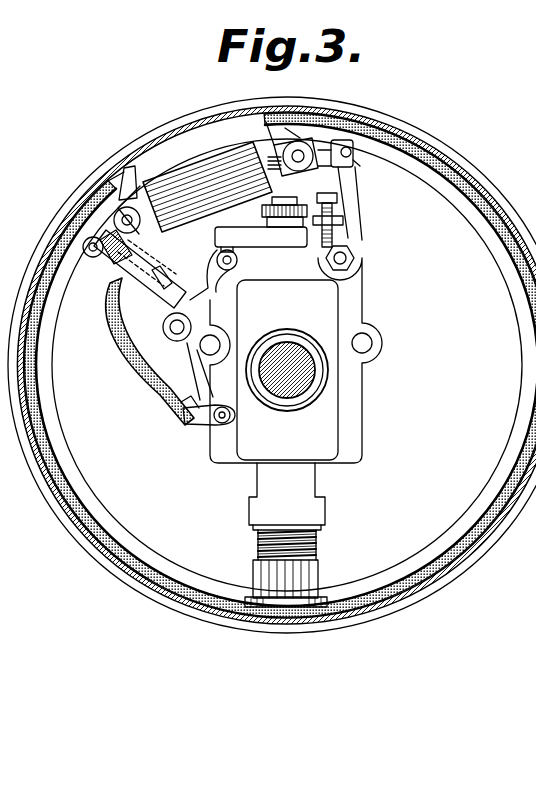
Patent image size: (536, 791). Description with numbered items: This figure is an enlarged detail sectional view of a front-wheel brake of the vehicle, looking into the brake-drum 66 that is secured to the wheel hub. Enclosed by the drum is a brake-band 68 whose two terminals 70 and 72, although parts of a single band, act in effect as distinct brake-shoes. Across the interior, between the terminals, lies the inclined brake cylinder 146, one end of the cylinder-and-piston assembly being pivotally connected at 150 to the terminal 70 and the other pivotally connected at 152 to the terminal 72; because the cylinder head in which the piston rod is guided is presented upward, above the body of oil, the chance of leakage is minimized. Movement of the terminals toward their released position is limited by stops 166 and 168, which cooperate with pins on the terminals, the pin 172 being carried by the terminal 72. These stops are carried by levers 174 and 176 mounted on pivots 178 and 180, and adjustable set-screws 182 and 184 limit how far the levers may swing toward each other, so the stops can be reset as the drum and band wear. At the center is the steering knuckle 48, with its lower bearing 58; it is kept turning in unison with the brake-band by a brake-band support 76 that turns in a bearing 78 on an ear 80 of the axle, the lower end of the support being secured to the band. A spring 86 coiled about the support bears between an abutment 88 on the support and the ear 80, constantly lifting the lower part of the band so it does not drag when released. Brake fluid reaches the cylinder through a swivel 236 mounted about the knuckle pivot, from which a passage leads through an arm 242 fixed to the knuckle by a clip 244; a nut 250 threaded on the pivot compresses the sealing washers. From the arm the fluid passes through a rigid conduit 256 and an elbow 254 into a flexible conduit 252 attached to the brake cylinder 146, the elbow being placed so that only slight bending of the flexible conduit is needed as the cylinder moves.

The steering knuckle 48 is at (351, 301).
The lower bearing 58 is at (305, 478).
The brake-drum 66 is at (323, 626).
The brake-band 68 is at (275, 611).
The brake-band terminal 70 is at (97, 188).
The brake-band terminal 72 is at (301, 145).
The brake-band support 76 is at (296, 543).
The bearing 78 is at (257, 593).
The ear 80 is at (305, 573).
The spring 86 is at (263, 540).
The abutment 88 is at (253, 518).
The brake cylinder 146 is at (205, 163).
The pivotal connection 150 is at (98, 206).
The pivotal connection 152 is at (341, 144).
The stop 166 is at (130, 264).
The stop 168 is at (352, 184).
The pin 172 is at (353, 162).
The lever 174 is at (170, 303).
The lever 176 is at (350, 208).
The pivot 178 is at (163, 328).
The pivot 180 is at (346, 259).
The set-screw 182 is at (114, 297).
The set-screw 184 is at (326, 233).
The swivel 236 is at (302, 247).
The arm 242 is at (262, 247).
The clip 244 is at (180, 285).
The nut 250 is at (300, 193).
The flexible conduit 252 is at (193, 363).
The elbow 254 is at (197, 415).
The rigid conduit 256 is at (183, 395).